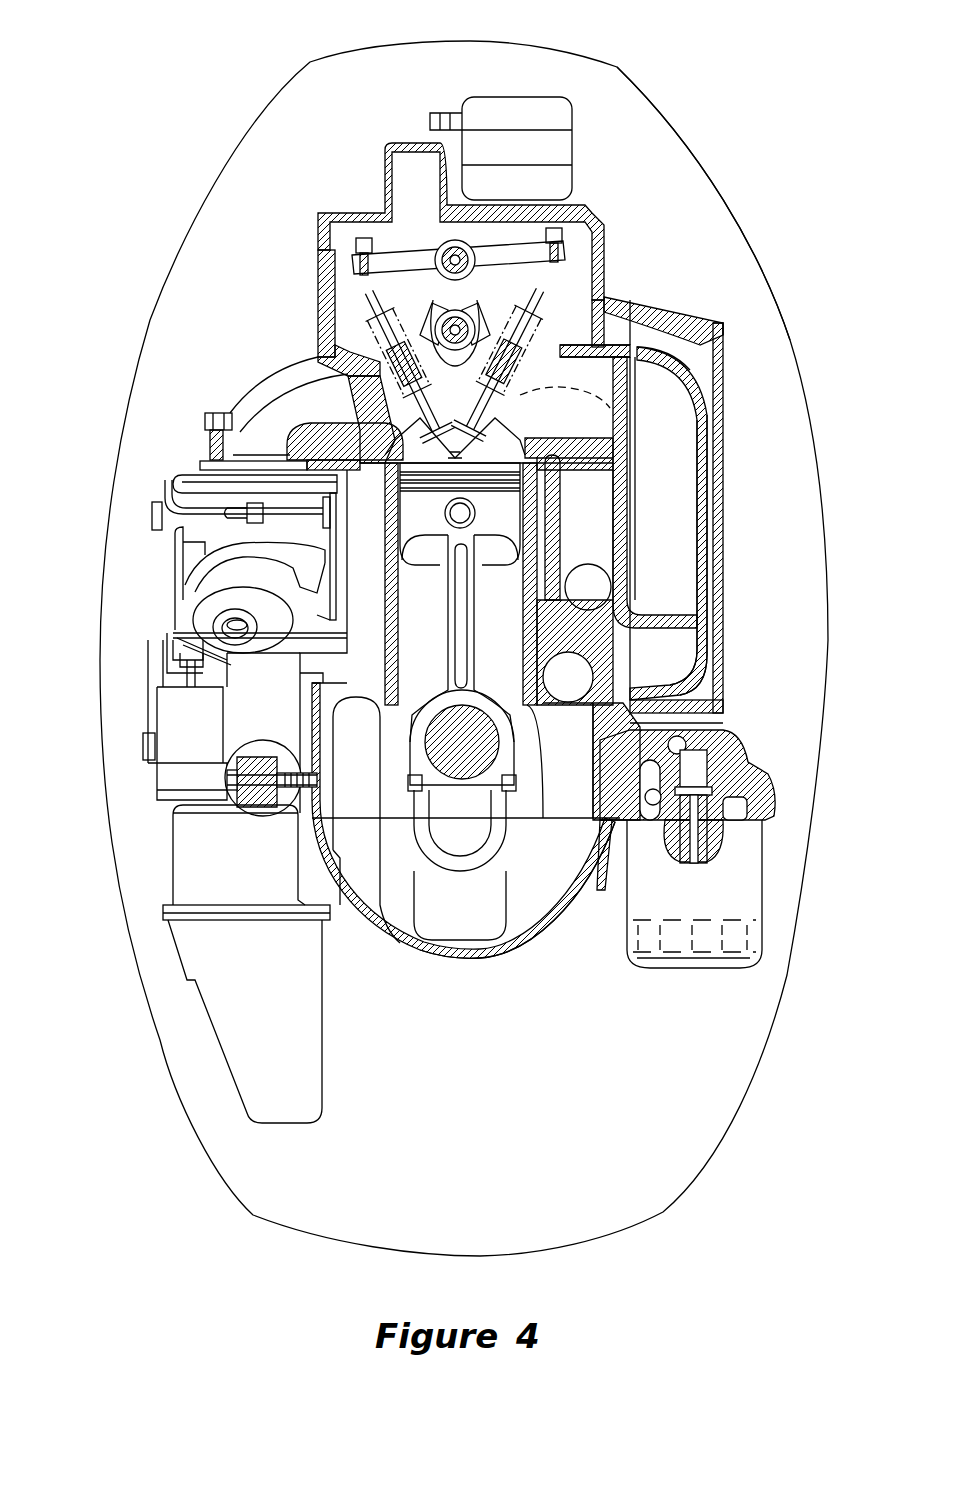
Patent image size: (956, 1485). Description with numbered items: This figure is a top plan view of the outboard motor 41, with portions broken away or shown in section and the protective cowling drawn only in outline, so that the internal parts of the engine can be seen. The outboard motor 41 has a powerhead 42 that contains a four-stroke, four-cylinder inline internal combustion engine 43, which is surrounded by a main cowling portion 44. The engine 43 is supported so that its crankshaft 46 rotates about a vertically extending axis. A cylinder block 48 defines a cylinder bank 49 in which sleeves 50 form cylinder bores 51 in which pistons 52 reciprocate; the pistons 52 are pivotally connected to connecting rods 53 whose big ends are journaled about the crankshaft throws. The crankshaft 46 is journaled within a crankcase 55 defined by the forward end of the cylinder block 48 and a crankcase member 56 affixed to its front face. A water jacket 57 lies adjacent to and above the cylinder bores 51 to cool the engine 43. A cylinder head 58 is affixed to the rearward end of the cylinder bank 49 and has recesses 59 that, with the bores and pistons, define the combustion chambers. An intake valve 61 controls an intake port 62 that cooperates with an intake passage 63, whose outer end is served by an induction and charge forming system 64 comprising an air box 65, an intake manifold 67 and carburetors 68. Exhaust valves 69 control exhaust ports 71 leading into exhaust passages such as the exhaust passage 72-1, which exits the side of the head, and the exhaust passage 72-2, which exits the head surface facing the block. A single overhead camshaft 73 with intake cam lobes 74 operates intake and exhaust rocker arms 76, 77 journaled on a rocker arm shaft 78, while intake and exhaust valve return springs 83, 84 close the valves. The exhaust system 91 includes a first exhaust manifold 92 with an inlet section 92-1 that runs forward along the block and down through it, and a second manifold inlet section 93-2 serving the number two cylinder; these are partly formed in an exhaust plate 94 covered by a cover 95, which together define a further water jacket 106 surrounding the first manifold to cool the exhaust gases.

The outboard motor 41 is at (753, 65).
The powerhead 42 is at (195, 162).
The internal combustion engine 43 is at (223, 367).
The main cowling portion 44 is at (745, 232).
The crankshaft 46 is at (430, 833).
The cylinder block 48 is at (317, 677).
The cylinder bank 49 is at (383, 612).
The sleeves 50 is at (400, 640).
The cylinder bores 51 is at (403, 667).
The pistons 52 is at (425, 540).
The connecting rods 53 is at (478, 672).
The crankcase 55 is at (402, 930).
The crankcase member 56 is at (553, 947).
The water jacket 57 is at (483, 352).
The cylinder head 58 is at (318, 292).
The recesses 59 is at (455, 450).
The intake valve 61 is at (428, 468).
The intake port 62 is at (403, 445).
The intake passage 63 is at (257, 423).
The induction and charge forming system 64 is at (128, 656).
The air box 65 is at (323, 1005).
The intake manifold 67 is at (237, 724).
The carburetors 68 is at (197, 603).
The exhaust valves 69 is at (505, 470).
The exhaust ports 71 is at (570, 385).
The exhaust passage 72-1 is at (600, 360).
The exhaust passage 72-2 is at (610, 453).
The camshaft 73 is at (343, 267).
The intake cam lobes 74 is at (383, 377).
The intake rocker arms 76 is at (413, 253).
The exhaust rocker arms 77 is at (523, 267).
The rocker arm shaft 78 is at (447, 250).
The intake valve return springs 83 is at (362, 315).
The exhaust valve return springs 84 is at (580, 353).
The exhaust system 91 is at (765, 377).
The first exhaust manifold 92 is at (593, 717).
The inlet section 92-1 is at (683, 567).
The inlet section 93-2 is at (607, 533).
The exhaust plate 94 is at (700, 323).
The cover 95 is at (723, 673).
The water jacket 106 is at (660, 337).